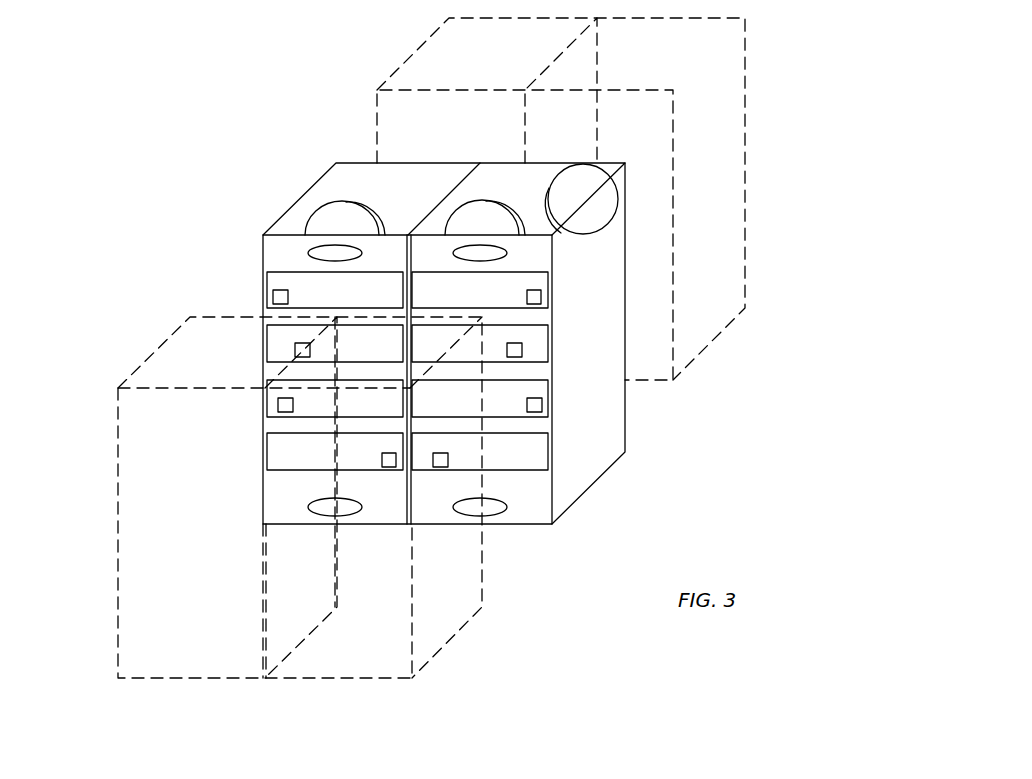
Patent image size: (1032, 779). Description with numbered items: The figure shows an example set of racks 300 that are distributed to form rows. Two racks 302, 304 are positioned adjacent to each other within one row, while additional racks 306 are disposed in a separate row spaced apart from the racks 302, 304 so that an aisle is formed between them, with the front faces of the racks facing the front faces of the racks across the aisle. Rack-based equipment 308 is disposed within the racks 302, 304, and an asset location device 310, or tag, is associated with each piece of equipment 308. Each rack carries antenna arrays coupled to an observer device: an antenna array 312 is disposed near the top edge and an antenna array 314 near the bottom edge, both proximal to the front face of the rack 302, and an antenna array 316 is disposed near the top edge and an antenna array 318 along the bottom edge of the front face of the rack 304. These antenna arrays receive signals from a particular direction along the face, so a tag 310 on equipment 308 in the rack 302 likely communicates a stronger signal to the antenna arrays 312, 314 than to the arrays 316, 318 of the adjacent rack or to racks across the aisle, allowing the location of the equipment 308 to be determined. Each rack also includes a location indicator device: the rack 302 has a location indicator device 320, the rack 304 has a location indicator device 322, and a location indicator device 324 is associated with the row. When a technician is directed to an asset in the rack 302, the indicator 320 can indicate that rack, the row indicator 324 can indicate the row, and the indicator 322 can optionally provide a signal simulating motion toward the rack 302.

The set of racks 300 is at (780, 136).
The rack 302 is at (352, 162).
The rack 304 is at (498, 162).
The racks 306 is at (395, 68).
The rack-based equipment 308 is at (286, 270).
The asset location device 310 is at (273, 292).
The antenna array 312 is at (317, 210).
The antenna array 314 is at (310, 505).
The antenna array 316 is at (496, 258).
The antenna array 318 is at (505, 507).
The location indicator device 320 is at (335, 245).
The location indicator device 322 is at (443, 220).
The location indicator device 324 is at (560, 190).